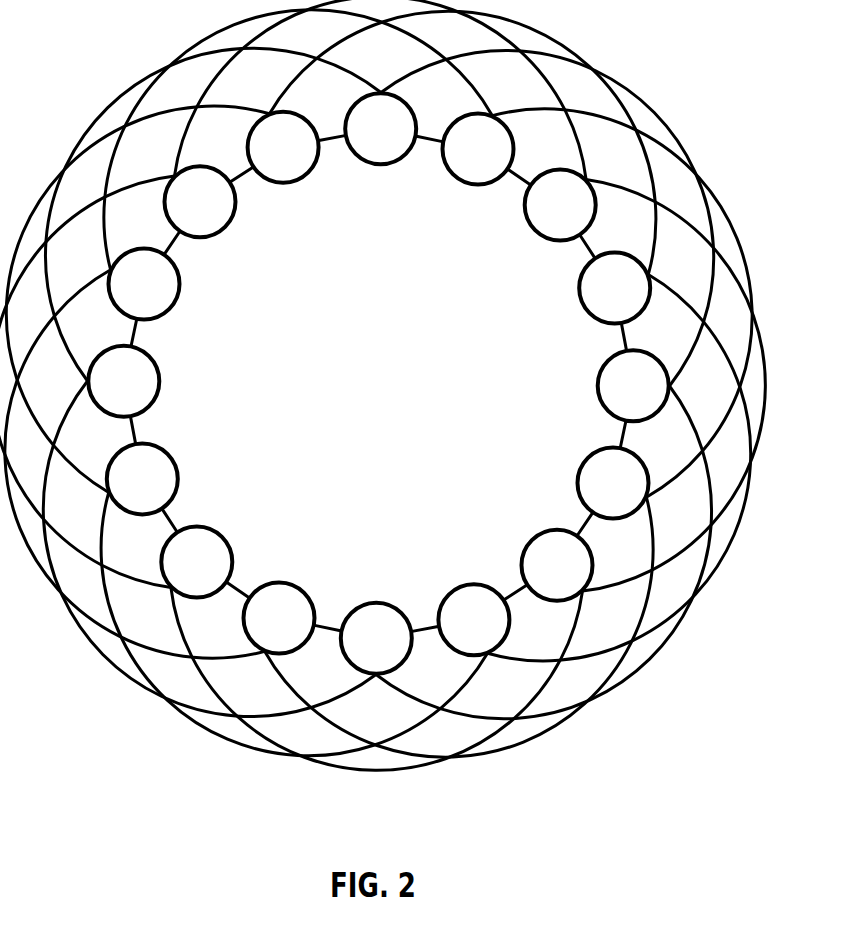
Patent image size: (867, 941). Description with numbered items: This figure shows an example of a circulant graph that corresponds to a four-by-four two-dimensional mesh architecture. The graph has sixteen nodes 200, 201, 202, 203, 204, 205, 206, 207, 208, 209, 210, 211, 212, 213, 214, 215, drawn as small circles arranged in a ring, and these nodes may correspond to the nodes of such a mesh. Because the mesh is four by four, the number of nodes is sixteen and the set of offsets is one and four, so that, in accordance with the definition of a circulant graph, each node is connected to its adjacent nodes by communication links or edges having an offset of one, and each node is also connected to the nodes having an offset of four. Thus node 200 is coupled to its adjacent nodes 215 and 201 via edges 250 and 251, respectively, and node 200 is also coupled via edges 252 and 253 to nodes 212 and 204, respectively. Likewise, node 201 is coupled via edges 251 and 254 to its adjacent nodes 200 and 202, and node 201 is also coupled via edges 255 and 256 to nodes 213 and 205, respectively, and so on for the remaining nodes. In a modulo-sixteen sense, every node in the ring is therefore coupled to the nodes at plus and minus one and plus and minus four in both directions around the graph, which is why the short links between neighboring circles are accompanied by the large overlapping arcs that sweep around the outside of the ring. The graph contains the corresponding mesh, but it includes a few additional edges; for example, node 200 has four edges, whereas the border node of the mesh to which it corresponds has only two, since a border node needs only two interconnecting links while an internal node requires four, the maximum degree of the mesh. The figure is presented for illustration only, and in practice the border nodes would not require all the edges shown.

The node 200 is at (381, 166).
The node 201 is at (471, 185).
The node 202 is at (534, 231).
The node 203 is at (582, 307).
The node 204 is at (596, 387).
The node 205 is at (577, 478).
The node 206 is at (531, 539).
The node 207 is at (461, 585).
The node 208 is at (377, 601).
The node 209 is at (285, 581).
The node 210 is at (223, 536).
The node 211 is at (177, 466).
The node 212 is at (161, 381).
The node 213 is at (180, 294).
The node 214 is at (226, 228).
The node 215 is at (297, 181).
The edge 250 is at (328, 138).
The edge 251 is at (432, 140).
The edge 254 is at (524, 180).
The edge 252 is at (127, 90).
The edge 253 is at (632, 92).
The edge 255 is at (233, 25).
The edge 256 is at (744, 258).